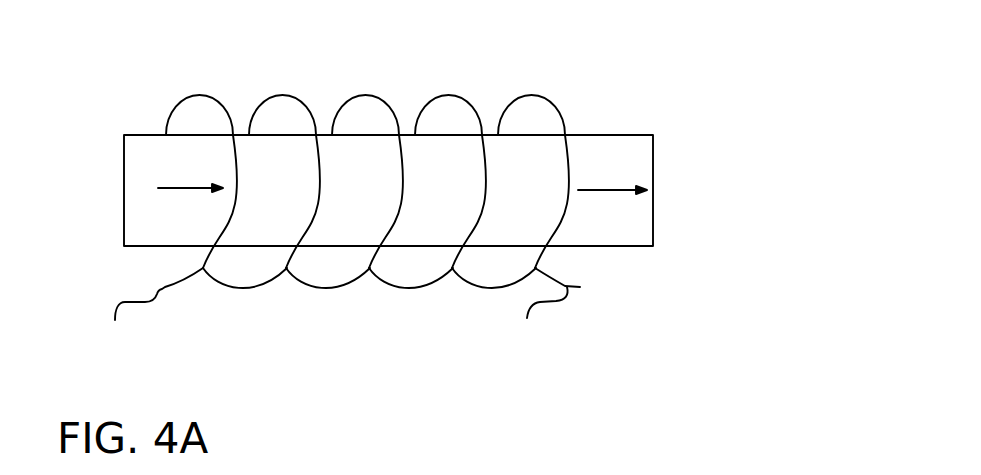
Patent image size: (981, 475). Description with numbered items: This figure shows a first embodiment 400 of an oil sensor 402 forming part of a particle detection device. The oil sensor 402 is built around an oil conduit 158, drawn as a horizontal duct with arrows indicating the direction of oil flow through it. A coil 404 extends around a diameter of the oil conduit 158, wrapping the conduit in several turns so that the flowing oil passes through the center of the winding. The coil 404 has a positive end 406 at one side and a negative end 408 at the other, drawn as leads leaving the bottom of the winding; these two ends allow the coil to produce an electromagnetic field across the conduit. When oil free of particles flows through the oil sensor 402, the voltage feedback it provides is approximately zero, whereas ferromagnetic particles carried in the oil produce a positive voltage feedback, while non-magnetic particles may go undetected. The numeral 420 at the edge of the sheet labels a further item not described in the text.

The coil assembly 400 is at (419, 177).
The conduit 158 is at (124, 135).
The coil 402 is at (369, 199).
The coil winding 404 is at (372, 85).
The first lead 406 is at (151, 309).
The second lead 408 is at (547, 309).
The coil assembly of FIG. 4B 420 is at (632, 470).